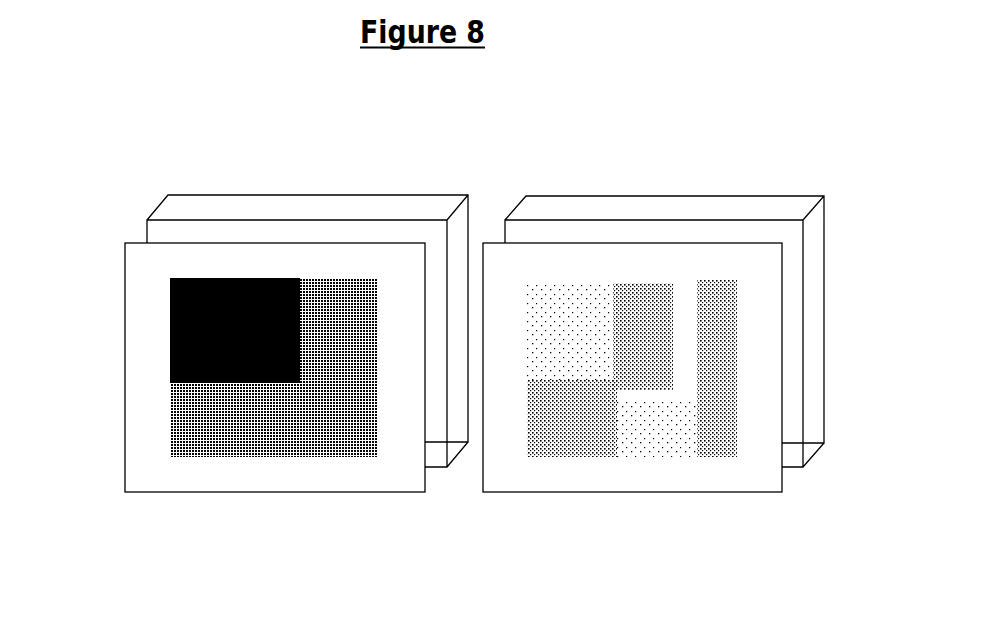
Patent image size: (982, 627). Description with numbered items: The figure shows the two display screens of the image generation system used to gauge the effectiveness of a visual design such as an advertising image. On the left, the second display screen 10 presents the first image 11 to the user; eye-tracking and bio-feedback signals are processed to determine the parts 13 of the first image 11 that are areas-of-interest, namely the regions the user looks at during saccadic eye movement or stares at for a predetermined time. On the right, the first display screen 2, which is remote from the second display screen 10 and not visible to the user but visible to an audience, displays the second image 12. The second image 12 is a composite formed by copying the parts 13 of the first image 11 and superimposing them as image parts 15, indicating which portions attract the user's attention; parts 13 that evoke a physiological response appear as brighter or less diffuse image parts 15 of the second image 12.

The first display screen 2 is at (748, 207).
The second display screen 10 is at (163, 209).
The first image 11 is at (193, 476).
The second image 12 is at (770, 402).
The parts of the first image 13 is at (300, 278).
The image parts of the second image 15 is at (643, 328).